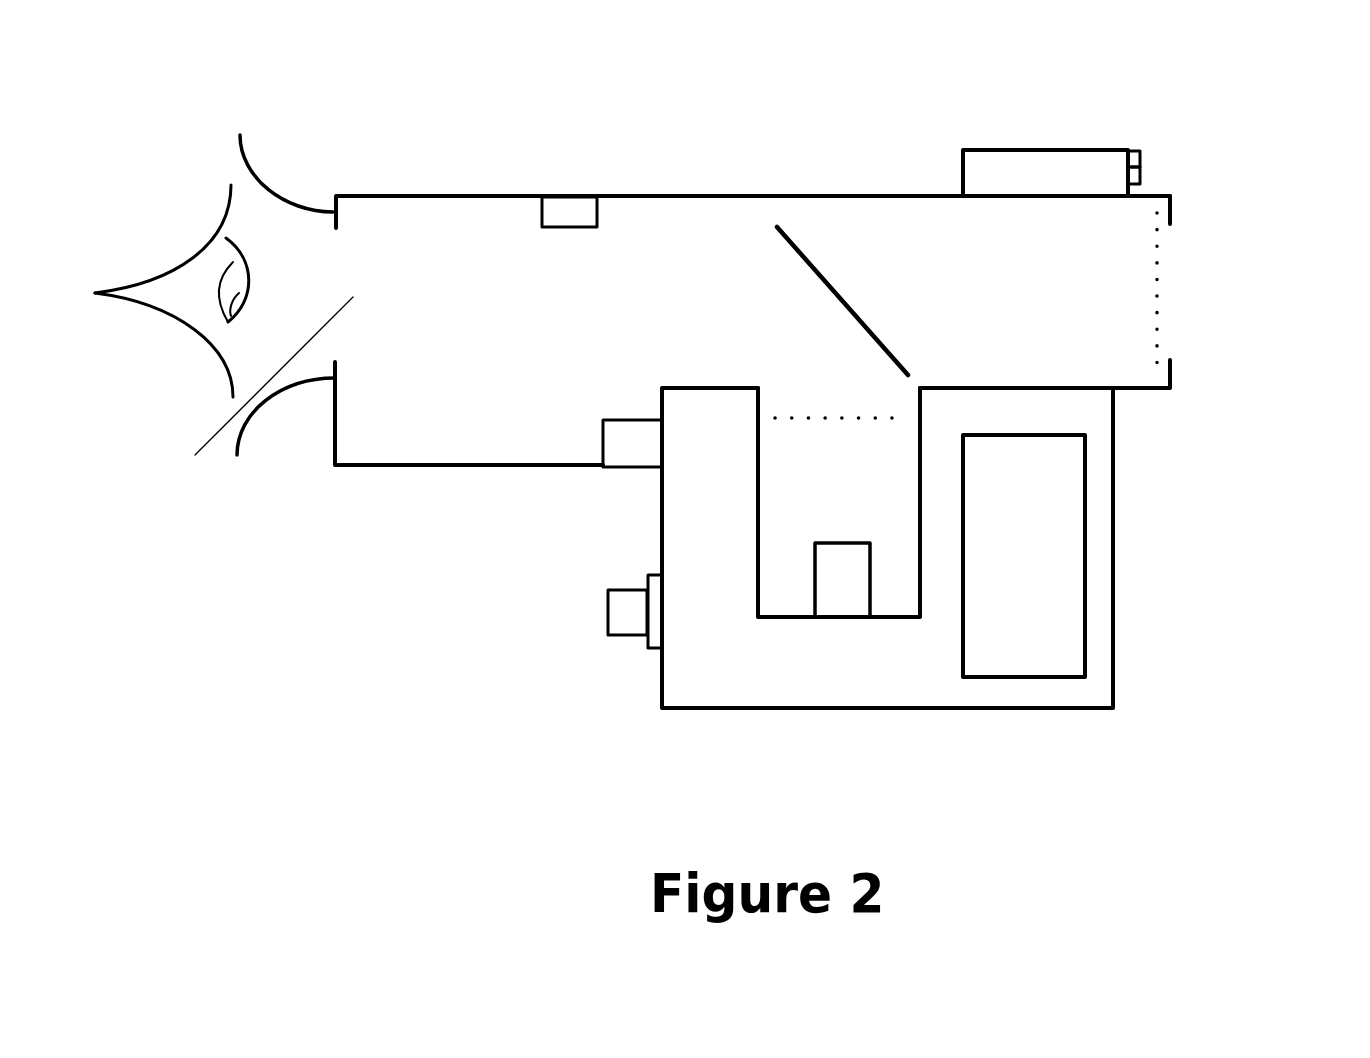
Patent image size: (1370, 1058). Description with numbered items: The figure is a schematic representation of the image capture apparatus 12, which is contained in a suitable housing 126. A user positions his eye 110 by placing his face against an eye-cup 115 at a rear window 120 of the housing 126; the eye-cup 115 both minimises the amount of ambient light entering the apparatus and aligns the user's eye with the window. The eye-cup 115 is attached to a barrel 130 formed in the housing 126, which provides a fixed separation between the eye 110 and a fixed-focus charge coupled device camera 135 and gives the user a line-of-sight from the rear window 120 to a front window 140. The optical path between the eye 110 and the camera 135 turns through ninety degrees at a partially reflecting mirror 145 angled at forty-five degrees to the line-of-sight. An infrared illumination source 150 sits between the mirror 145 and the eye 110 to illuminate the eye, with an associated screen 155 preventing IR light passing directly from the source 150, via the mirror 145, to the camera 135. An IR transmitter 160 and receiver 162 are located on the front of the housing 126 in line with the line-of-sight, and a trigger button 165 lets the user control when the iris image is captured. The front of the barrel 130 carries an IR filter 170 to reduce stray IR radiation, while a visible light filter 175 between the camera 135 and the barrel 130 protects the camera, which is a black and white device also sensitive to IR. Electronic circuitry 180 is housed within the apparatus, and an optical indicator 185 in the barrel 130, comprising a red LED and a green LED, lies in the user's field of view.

The image capture apparatus 12 is at (452, 515).
The eye 110 is at (220, 247).
The eye-cup 115 is at (273, 190).
The rear window 120 is at (254, 402).
The housing 126 is at (357, 468).
The barrel 130 is at (495, 196).
The charge coupled device (CCD) camera 135 is at (843, 560).
The front window 140 is at (1172, 330).
The partially reflecting mirror 145 is at (827, 280).
The infrared (IR) illumination source 150 is at (623, 462).
The screen 155 is at (662, 388).
The IR transmitter 160 is at (1142, 158).
The IR receiver 162 is at (1142, 175).
The trigger button 165 is at (622, 613).
The IR filter 170 is at (1167, 240).
The visible light filter 175 is at (840, 417).
The electronic circuitry 180 is at (1055, 645).
The optical indicator 185 is at (565, 198).